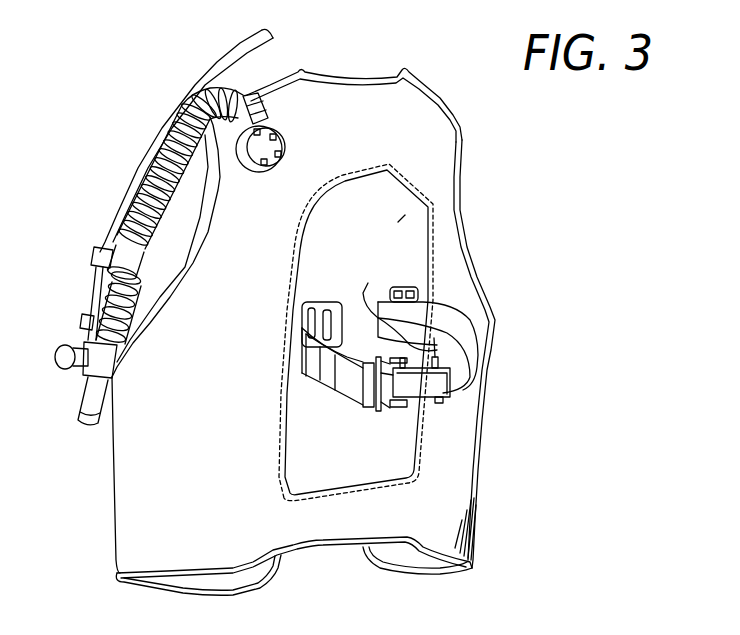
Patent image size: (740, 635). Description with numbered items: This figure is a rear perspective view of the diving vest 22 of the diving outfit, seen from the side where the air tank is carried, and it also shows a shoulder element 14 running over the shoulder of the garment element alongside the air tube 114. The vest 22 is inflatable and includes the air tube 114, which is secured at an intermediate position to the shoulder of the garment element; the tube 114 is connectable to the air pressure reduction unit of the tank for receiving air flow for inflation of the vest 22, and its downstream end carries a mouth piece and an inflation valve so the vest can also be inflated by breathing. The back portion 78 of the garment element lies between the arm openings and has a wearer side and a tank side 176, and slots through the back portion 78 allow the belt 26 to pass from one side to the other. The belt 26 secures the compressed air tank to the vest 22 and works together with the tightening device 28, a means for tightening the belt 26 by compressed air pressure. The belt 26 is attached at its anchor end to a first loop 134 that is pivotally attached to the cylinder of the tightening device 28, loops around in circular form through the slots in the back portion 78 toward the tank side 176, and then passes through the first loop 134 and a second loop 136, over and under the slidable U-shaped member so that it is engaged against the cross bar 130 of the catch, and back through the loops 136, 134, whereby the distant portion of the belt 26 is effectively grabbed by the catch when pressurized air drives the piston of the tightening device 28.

The shoulder band 14 is at (170, 115).
The air tube 114 is at (143, 182).
The vest 22 is at (450, 260).
The back portion 78 is at (385, 193).
The tank side 176 is at (405, 215).
The second loop 136 is at (390, 301).
The belt 26 is at (337, 387).
The cross bar 130 is at (377, 413).
The first loop 134 is at (493, 320).
The tightening device 28 is at (448, 394).